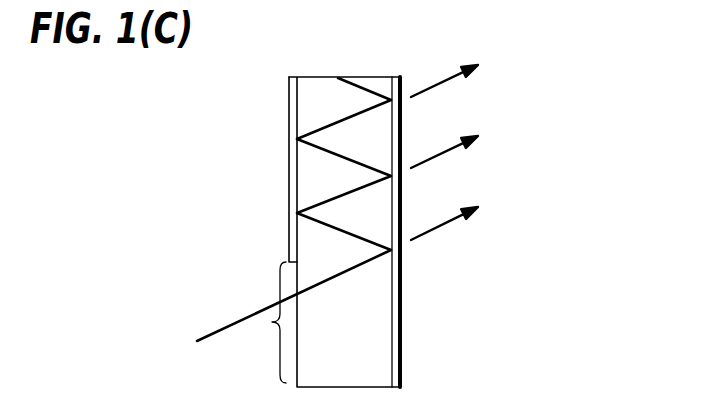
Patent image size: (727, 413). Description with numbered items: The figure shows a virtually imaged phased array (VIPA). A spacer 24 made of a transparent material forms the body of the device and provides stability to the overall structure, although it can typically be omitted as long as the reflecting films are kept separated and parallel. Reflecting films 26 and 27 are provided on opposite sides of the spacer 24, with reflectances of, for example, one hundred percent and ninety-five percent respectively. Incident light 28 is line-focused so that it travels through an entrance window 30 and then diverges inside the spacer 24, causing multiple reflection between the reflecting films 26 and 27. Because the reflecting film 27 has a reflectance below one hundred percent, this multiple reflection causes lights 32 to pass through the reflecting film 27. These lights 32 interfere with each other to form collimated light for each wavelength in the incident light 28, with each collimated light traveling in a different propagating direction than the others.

The spacer 24 is at (372, 341).
The reflecting film 26 is at (289, 126).
The reflecting film 27 is at (403, 283).
The incident light 28 is at (218, 329).
The entrance window 30 is at (272, 322).
The lights 32 is at (487, 50).